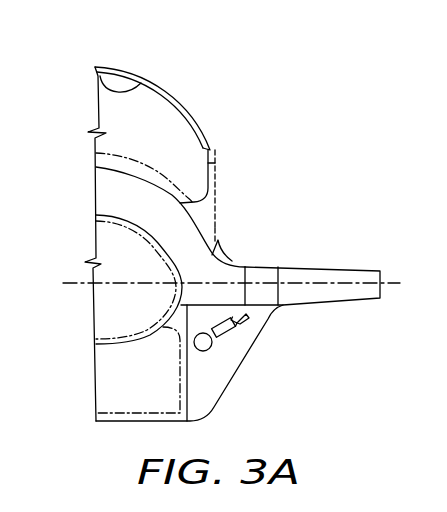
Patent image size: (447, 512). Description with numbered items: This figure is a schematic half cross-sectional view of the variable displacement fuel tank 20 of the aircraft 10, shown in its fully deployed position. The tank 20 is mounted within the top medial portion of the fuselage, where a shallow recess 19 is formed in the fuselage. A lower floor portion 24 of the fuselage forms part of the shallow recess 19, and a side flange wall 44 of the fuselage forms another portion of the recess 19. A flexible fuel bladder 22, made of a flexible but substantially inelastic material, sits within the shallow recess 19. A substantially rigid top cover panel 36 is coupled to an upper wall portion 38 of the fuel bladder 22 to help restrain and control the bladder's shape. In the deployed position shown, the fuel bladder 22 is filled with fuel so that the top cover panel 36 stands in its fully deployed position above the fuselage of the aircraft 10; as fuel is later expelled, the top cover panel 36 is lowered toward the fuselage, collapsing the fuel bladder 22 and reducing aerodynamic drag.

The aircraft 10 is at (201, 66).
The variable displacement fuel tank 20 is at (207, 98).
The top cover panel 36 is at (122, 67).
The upper wall portion 38 is at (97, 83).
The flexible fuel bladder 22 is at (215, 163).
The lower floor portion 24 is at (196, 200).
The shallow recess 19 is at (202, 231).
The side flange wall 44 is at (226, 256).